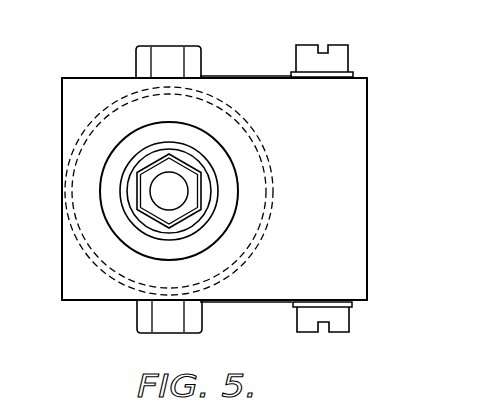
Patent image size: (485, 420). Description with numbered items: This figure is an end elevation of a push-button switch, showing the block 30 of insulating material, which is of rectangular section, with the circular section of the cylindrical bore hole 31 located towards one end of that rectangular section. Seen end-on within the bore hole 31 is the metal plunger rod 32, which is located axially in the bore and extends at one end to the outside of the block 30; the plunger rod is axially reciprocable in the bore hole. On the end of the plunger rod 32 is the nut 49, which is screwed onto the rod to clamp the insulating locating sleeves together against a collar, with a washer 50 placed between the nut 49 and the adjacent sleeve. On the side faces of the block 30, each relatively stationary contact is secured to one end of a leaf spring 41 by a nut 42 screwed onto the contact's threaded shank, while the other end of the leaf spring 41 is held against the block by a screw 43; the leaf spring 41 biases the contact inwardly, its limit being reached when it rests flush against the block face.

The block 30 is at (262, 88).
The cylindrical bore hole 31 is at (126, 228).
The plunger rod 32 is at (154, 197).
The leaf spring 41 is at (223, 76).
The nut 42 is at (163, 53).
The screw 43 is at (318, 28).
The nut 49 is at (154, 169).
The washer 50 is at (207, 168).